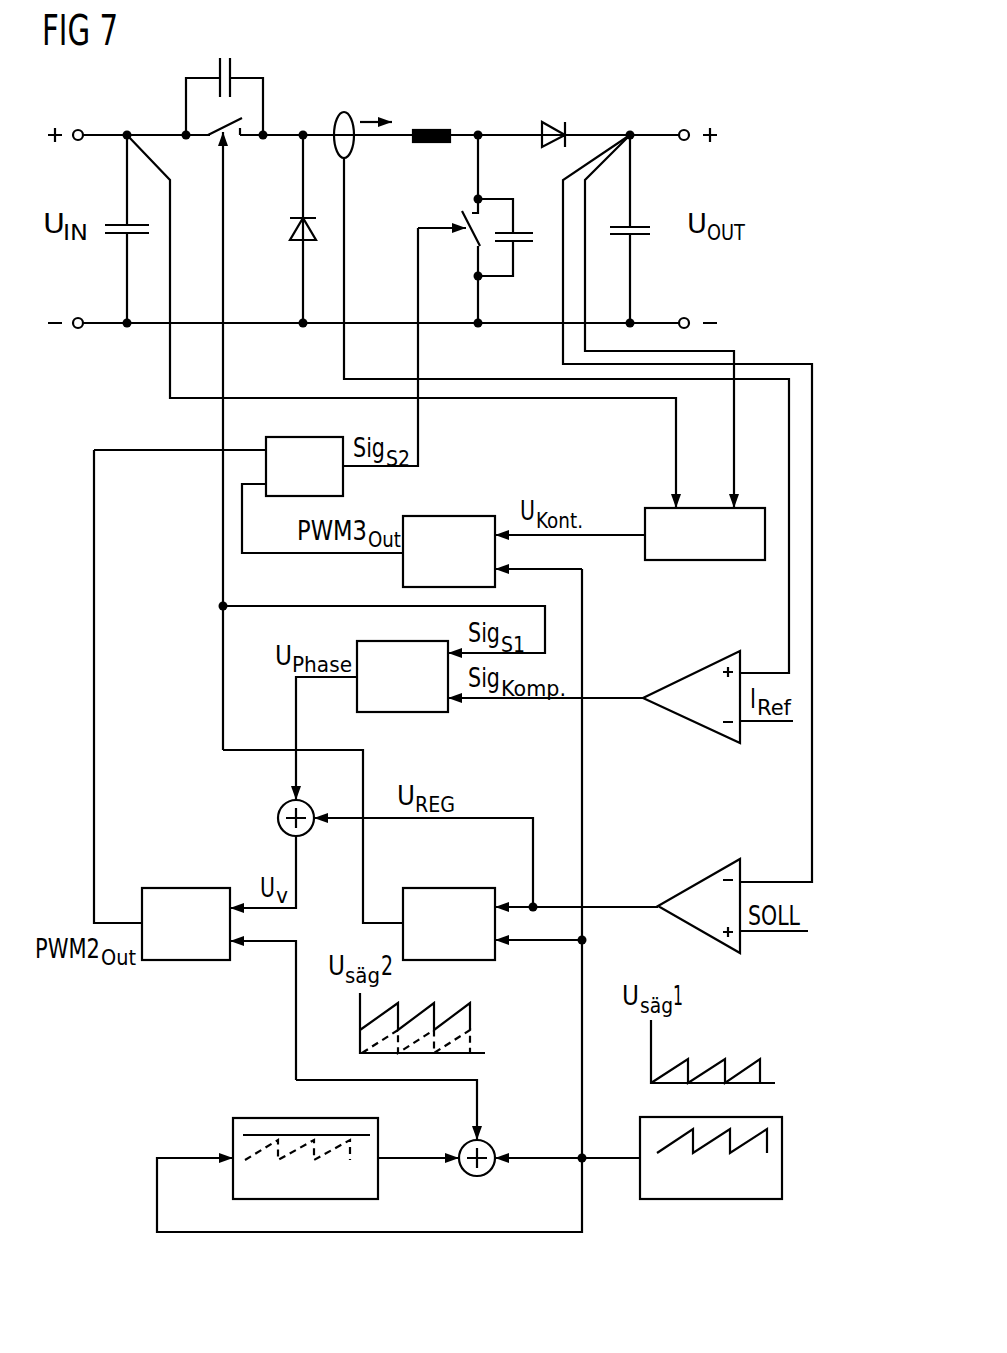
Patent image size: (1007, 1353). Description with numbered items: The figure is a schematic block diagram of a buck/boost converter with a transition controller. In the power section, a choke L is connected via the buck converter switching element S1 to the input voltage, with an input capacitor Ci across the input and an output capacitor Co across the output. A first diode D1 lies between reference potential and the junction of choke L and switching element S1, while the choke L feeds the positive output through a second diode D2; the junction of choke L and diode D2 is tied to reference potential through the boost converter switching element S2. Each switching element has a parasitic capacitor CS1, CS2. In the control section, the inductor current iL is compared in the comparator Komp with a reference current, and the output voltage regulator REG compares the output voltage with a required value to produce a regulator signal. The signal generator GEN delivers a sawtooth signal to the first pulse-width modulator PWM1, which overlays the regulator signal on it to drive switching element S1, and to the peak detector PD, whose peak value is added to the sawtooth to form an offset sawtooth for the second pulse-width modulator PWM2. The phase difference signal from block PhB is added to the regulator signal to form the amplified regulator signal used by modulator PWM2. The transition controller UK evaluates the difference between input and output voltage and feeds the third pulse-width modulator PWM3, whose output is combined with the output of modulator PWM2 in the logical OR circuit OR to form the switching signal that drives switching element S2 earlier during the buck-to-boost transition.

The input capacitor Ci is at (118, 222).
The parasitic capacitor of the buck converter switching element CS1 is at (232, 72).
The buck converter switching element S1 is at (216, 142).
The first diode D1 is at (289, 226).
The inductor current iL is at (345, 110).
The choke L is at (432, 127).
The second diode D2 is at (560, 122).
The parasitic capacitor of the boost converter switching element CS2 is at (525, 228).
The boost converter switching element S2 is at (455, 238).
The output capacitor Co is at (642, 222).
The logical OR circuit OR is at (304, 466).
The third pulse-width modulator PWM3 is at (449, 551).
The transition controller UK is at (705, 534).
The phase difference signal block PhB is at (402, 676).
The comparator Komp is at (716, 697).
The output voltage regulator REG is at (699, 906).
The first pulse-width modulator PWM1 is at (449, 924).
The second pulse-width modulator PWM2 is at (186, 924).
The peak detector PD is at (305, 1158).
The signal generator GEN is at (711, 1158).